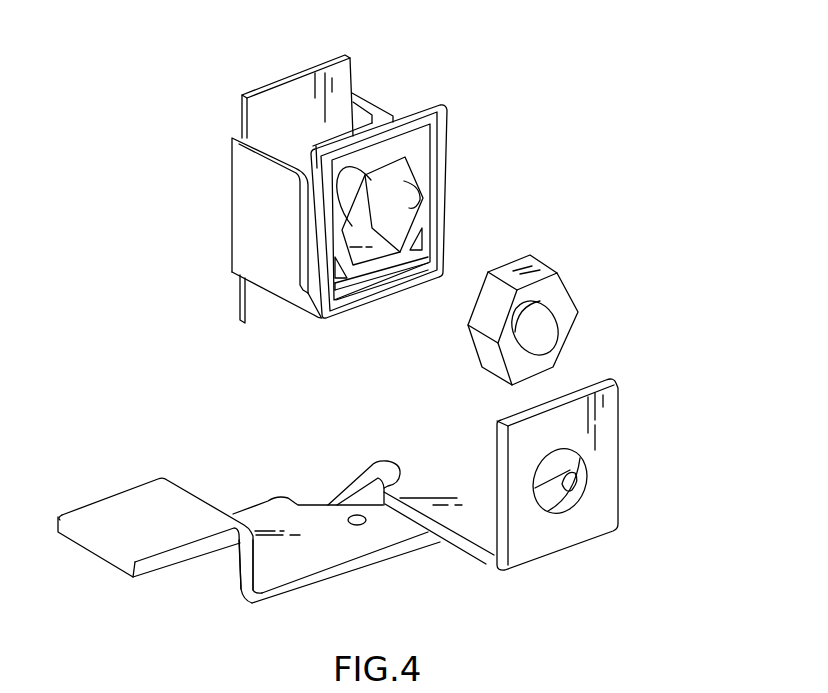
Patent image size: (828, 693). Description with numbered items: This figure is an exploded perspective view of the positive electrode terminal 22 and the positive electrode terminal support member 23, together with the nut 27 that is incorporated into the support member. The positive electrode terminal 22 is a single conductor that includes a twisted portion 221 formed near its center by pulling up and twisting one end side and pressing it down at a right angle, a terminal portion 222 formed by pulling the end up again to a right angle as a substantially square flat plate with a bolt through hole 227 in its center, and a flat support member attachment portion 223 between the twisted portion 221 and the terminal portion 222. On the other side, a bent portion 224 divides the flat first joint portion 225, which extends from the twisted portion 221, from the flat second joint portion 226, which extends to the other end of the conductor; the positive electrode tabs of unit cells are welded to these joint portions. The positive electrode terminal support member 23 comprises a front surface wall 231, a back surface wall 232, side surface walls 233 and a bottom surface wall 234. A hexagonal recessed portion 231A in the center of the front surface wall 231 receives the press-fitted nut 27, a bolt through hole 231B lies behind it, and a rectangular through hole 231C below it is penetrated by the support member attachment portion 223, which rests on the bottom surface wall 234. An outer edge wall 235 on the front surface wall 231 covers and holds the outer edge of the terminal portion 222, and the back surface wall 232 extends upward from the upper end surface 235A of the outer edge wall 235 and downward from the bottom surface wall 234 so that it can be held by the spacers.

The positive electrode terminal support member 23 is at (413, 88).
The front surface wall 231 is at (422, 150).
The recessed portion 231A is at (405, 180).
The bolt through hole 231B is at (392, 220).
The rectangular through hole 231C is at (350, 312).
The back surface wall 232 is at (245, 117).
The side surface walls 233 is at (386, 104).
The bottom surface wall 234 is at (352, 318).
The outer edge wall 235 is at (452, 126).
The upper end surface 235A is at (442, 104).
The nut 27 is at (556, 272).
The positive electrode terminal 22 is at (645, 371).
The twisted portion 221 is at (404, 462).
The terminal portion 222 is at (620, 407).
The support member attachment portion 223 is at (448, 546).
The bent portion 224 is at (243, 570).
The first joint portion 225 is at (268, 512).
The second joint portion 226 is at (121, 512).
The bolt through hole 227 is at (580, 495).